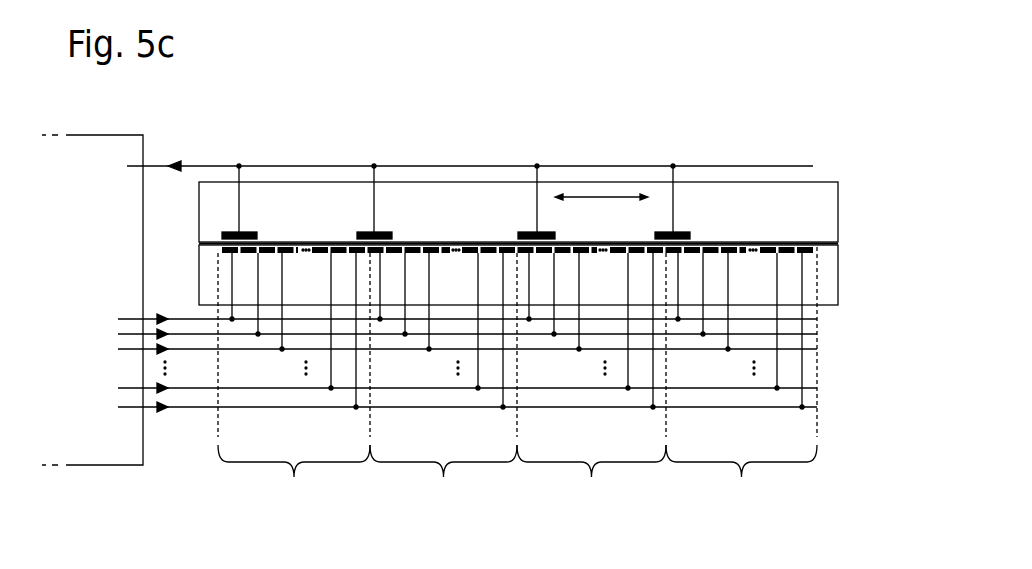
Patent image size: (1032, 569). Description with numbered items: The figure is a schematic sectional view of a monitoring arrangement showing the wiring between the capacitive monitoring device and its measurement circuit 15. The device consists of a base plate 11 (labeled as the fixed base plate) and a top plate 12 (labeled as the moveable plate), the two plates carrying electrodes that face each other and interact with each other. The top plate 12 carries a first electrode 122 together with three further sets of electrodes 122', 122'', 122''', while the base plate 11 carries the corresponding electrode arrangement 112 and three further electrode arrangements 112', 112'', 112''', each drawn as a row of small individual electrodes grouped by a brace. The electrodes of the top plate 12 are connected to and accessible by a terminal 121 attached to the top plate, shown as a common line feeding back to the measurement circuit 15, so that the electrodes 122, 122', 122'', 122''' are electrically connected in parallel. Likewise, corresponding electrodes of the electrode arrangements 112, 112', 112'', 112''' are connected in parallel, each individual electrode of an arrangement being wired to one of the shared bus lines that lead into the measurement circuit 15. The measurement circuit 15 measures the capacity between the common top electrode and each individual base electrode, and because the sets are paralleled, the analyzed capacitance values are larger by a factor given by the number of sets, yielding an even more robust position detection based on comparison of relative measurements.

The base plate 11 is at (864, 279).
The top plate 12 is at (862, 201).
The measurement circuit 15 is at (92, 300).
The terminal 121 is at (238, 165).
The electrode 122 is at (260, 164).
The electrode 122' is at (392, 164).
The electrode 122'' is at (546, 164).
The electrode 122''' is at (695, 164).
The electrode arrangement 112 is at (294, 384).
The electrode arrangement 112' is at (443, 384).
The electrode arrangement 112'' is at (591, 384).
The electrode arrangement 112''' is at (741, 381).